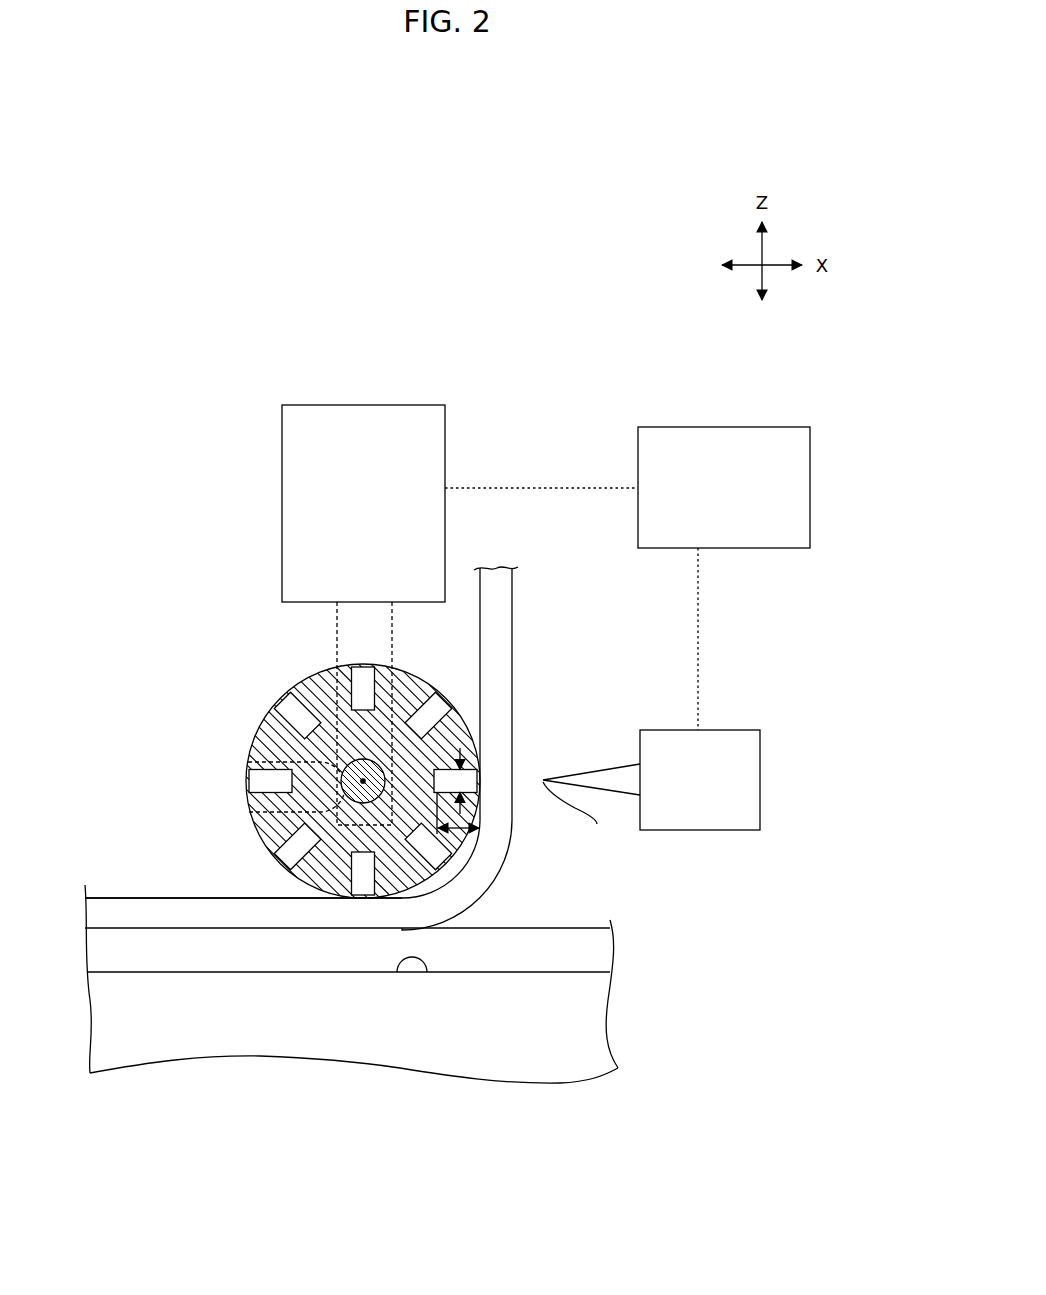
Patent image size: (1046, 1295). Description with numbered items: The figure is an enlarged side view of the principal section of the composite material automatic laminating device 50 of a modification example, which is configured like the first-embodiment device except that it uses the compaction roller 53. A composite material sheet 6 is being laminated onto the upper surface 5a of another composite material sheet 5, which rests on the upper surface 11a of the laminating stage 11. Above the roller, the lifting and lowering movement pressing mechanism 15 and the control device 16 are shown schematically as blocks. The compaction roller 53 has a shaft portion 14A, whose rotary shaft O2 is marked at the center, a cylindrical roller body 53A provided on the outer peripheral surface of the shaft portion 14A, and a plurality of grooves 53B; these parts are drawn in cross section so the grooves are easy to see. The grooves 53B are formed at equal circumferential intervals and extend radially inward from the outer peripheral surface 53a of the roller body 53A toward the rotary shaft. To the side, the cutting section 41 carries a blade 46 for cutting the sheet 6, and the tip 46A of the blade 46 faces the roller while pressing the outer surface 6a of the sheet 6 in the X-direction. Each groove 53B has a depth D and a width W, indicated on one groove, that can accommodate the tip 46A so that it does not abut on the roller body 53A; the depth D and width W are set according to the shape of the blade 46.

The composite material automatic laminating device 50 is at (132, 295).
The lifting and lowering movement pressing mechanism 15 is at (362, 425).
The control device 16 is at (697, 447).
The cutting section 41 is at (770, 780).
The blade 46 is at (603, 763).
The tip 46A is at (581, 819).
The composite material sheet 6 is at (497, 596).
The outer surface 6a is at (187, 897).
The composite material sheet 5 is at (600, 950).
The upper surface 5a is at (550, 927).
The laminating stage 11 is at (345, 1040).
The upper surface 11a is at (427, 972).
The compaction roller 53 is at (245, 727).
The outer peripheral surface 53a is at (300, 688).
The roller body 53A is at (320, 690).
The groove 53B is at (290, 707).
The shaft portion 14A is at (341, 788).
The rotary shaft O2 is at (363, 781).
The width W is at (465, 782).
The depth D is at (462, 832).